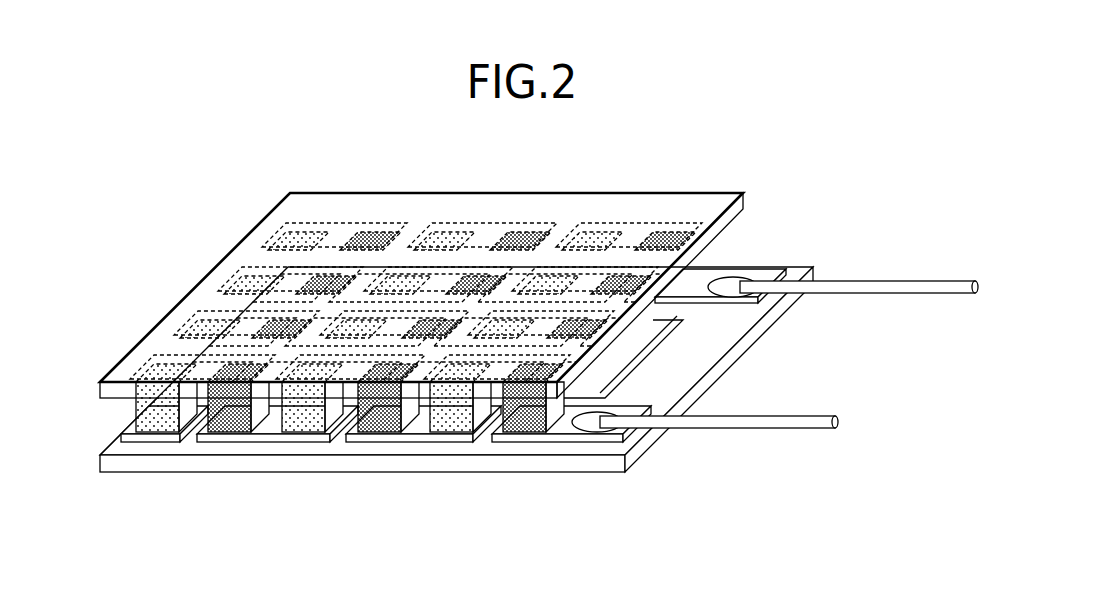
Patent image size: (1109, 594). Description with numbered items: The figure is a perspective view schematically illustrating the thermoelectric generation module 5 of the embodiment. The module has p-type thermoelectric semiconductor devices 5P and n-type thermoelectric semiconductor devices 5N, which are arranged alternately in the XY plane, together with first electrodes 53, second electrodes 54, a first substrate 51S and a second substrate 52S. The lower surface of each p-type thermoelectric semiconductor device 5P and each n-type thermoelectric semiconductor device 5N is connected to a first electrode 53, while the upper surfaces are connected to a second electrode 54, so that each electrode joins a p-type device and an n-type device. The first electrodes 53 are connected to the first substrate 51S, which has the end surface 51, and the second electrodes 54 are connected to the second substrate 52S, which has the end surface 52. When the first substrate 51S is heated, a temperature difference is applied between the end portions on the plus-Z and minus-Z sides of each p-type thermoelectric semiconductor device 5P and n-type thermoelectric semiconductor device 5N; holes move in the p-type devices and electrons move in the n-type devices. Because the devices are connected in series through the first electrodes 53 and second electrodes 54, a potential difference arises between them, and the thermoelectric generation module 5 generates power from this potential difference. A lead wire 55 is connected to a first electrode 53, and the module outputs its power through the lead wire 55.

The thermoelectric generation module 5 is at (247, 204).
The end surface 51 is at (450, 472).
The first substrate 51S is at (99, 462).
The end surface 52 is at (572, 206).
The second substrate 52S is at (196, 285).
The first electrode 53 is at (372, 438).
The second electrode 54 is at (182, 300).
The lead wire 55 is at (872, 284).
The p-type thermoelectric semiconductor device 5P is at (223, 425).
The n-type thermoelectric semiconductor device 5N is at (300, 425).